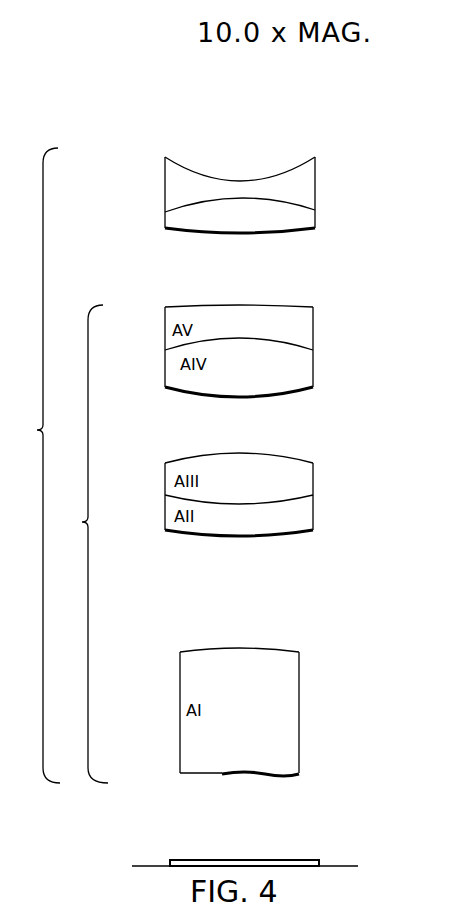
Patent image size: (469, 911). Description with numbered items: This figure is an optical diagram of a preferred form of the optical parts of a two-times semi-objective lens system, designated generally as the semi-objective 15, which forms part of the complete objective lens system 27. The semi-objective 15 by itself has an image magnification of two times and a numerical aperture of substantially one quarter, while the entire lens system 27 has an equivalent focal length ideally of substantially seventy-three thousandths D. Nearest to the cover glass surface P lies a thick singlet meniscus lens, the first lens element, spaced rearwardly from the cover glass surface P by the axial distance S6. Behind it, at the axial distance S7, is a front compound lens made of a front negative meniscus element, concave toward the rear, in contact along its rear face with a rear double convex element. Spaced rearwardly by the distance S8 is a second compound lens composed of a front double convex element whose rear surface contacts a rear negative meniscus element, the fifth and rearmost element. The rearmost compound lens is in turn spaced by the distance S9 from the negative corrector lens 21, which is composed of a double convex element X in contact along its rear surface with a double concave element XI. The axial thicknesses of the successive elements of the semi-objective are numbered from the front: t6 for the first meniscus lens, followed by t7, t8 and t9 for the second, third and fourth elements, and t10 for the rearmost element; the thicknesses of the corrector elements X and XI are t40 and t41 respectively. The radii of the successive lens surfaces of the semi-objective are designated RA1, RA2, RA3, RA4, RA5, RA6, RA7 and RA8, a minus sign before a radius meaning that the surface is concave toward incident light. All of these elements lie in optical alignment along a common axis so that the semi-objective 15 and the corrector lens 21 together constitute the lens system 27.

The negative corrector lens 21 is at (320, 189).
The lens system 27 is at (34, 465).
The semi-objective 15 is at (83, 544).
The cover glass surface P is at (190, 860).
The lens surface radius RA1 is at (222, 775).
The lens surface radius RA2 is at (190, 651).
The lens surface radius RA3 is at (180, 537).
The lens surface radius RA4 is at (175, 498).
The lens surface radius RA5 is at (182, 456).
The lens surface radius RA6 is at (178, 389).
The lens surface radius RA7 is at (175, 346).
The lens surface radius RA8 is at (175, 307).
The axial thickness t6 is at (239, 655).
The axial thickness t7 is at (237, 524).
The axial thickness t8 is at (239, 483).
The axial thickness t9 is at (242, 363).
The axial thickness t10 is at (243, 322).
The axial thickness t40 is at (242, 218).
The axial thickness t41 is at (240, 190).
The axial distance S6 is at (239, 779).
The axial distance S7 is at (239, 539).
The axial distance S8 is at (242, 435).
The axial distance S9 is at (239, 234).